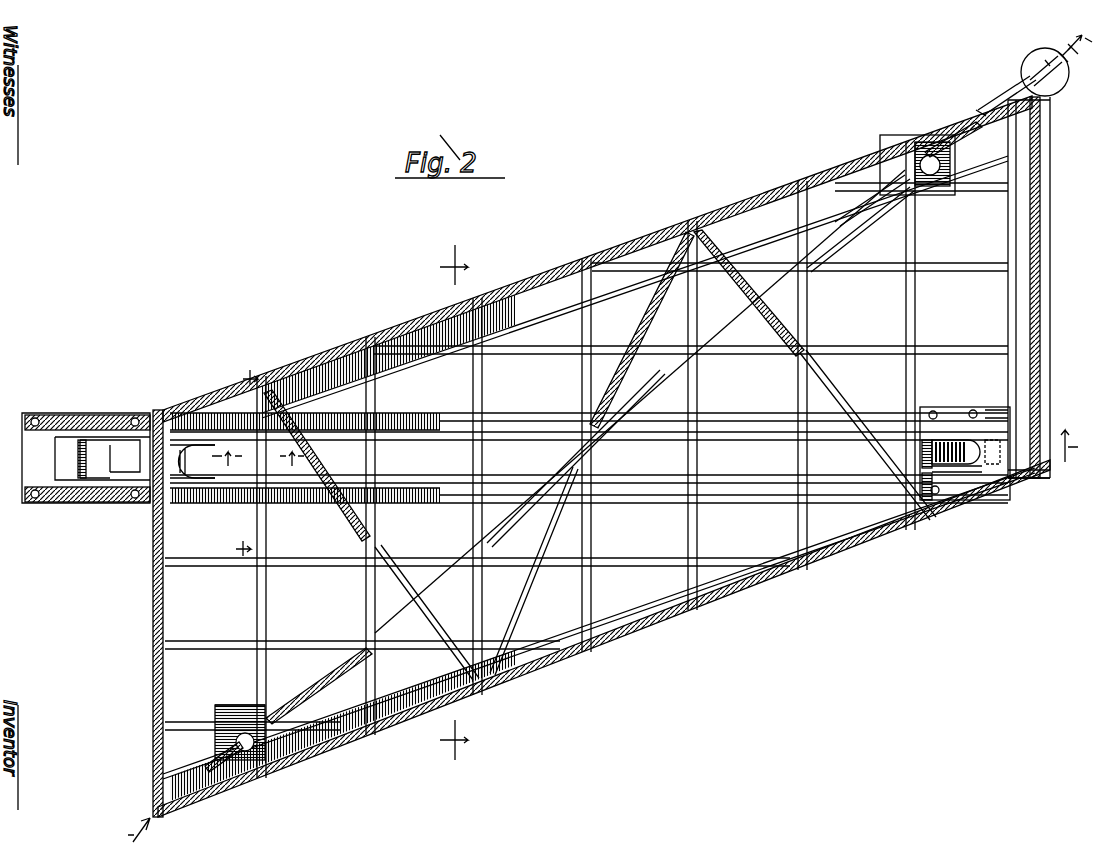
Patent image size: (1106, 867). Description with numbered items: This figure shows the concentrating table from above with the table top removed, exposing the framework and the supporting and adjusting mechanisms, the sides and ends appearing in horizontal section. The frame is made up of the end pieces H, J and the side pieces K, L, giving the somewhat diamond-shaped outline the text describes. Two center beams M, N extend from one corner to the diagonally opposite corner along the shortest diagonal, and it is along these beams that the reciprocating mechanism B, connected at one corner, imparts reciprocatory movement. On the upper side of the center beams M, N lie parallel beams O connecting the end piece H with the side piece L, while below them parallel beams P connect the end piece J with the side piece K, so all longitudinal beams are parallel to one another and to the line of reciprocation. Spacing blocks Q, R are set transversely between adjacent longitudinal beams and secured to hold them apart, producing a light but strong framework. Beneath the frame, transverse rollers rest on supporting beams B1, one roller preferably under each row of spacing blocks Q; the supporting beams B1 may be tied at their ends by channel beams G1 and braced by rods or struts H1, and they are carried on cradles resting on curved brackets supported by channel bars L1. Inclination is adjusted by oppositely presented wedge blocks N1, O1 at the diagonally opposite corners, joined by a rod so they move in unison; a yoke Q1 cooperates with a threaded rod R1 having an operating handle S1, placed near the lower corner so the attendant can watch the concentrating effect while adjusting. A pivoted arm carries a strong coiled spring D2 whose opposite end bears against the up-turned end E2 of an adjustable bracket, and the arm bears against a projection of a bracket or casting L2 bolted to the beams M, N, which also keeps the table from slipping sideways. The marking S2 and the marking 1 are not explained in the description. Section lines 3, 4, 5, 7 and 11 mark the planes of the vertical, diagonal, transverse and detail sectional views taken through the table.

The reciprocating mechanism B is at (45, 405).
The supporting beams B1 is at (276, 592).
The side piece K is at (547, 276).
The side piece L is at (618, 626).
The channel bars L1 is at (748, 412).
The bracket or casting L2 is at (1000, 486).
The end piece J is at (1008, 292).
The channel beams G1 is at (540, 360).
The parallel beams P is at (973, 185).
The end piece H is at (172, 612).
The rods or struts H1 is at (825, 385).
The center beam M is at (422, 432).
The center beam N is at (530, 484).
The wedge block N1 is at (872, 200).
The spacing blocks Q is at (470, 385).
The yoke Q1 is at (950, 162).
The spacing blocks R is at (380, 392).
The threaded rod R1 is at (1010, 100).
The operating handle S1 is at (1060, 75).
The channel end S2 is at (185, 470).
The coiled spring D2 is at (965, 440).
The up-turned end of bracket E2 is at (936, 495).
The parallel beams O is at (306, 560).
The wedge block O1 is at (215, 775).
The section line 1 is at (1085, 32).
The section line 3 is at (1075, 446).
The section line 4 is at (133, 830).
The section line 5 is at (454, 503).
The section line 7 is at (256, 460).
The section line 11 is at (247, 453).